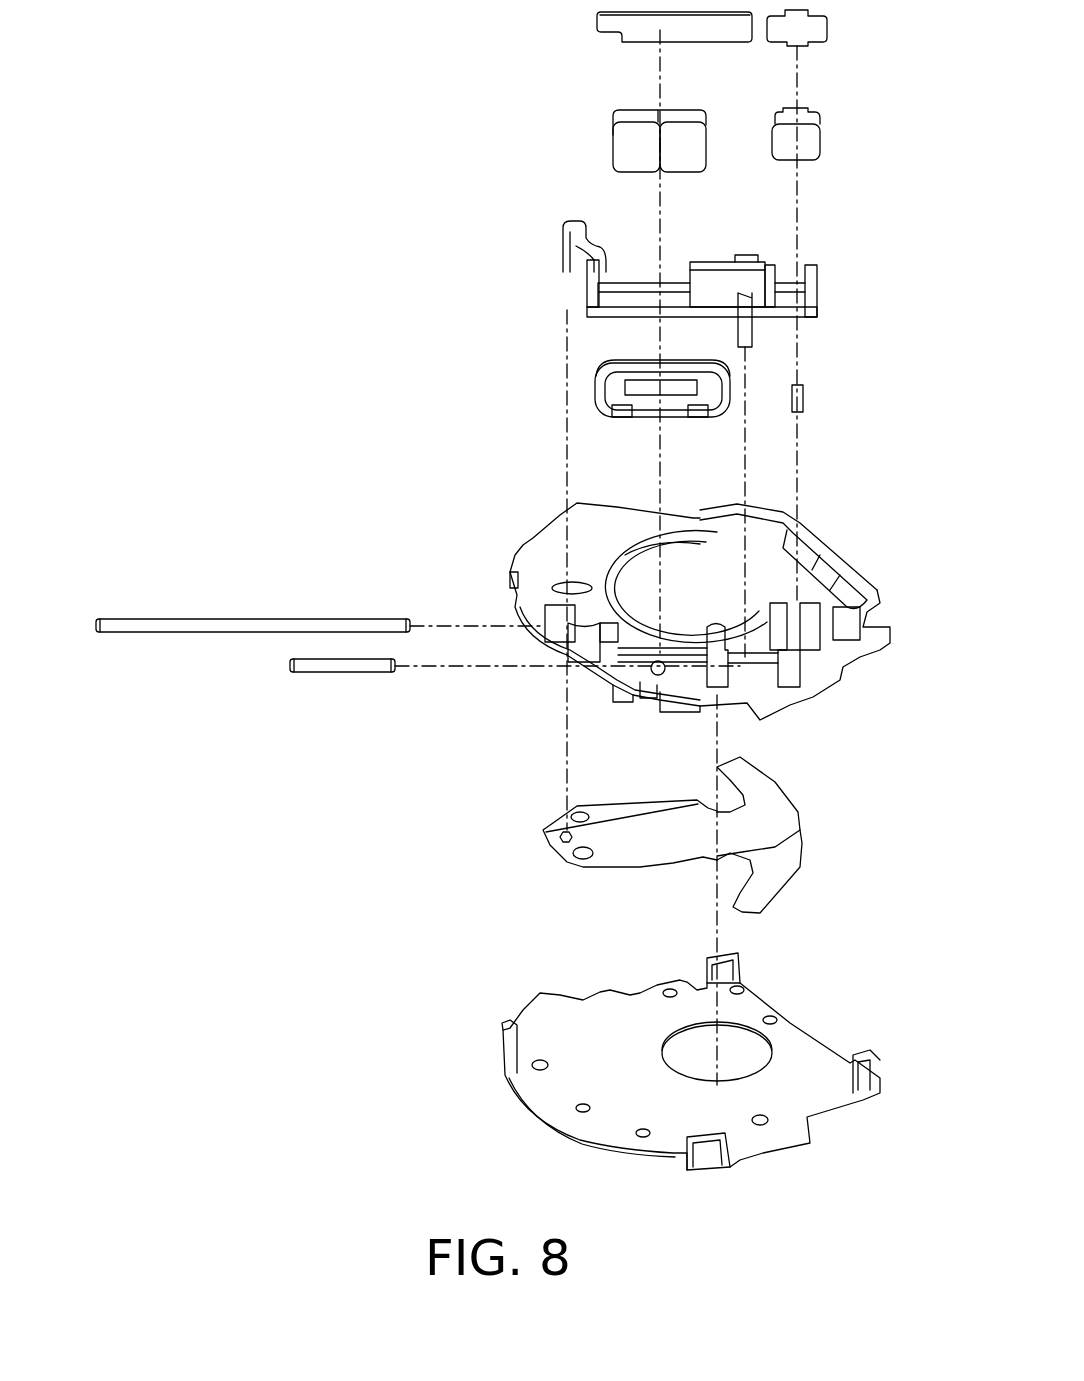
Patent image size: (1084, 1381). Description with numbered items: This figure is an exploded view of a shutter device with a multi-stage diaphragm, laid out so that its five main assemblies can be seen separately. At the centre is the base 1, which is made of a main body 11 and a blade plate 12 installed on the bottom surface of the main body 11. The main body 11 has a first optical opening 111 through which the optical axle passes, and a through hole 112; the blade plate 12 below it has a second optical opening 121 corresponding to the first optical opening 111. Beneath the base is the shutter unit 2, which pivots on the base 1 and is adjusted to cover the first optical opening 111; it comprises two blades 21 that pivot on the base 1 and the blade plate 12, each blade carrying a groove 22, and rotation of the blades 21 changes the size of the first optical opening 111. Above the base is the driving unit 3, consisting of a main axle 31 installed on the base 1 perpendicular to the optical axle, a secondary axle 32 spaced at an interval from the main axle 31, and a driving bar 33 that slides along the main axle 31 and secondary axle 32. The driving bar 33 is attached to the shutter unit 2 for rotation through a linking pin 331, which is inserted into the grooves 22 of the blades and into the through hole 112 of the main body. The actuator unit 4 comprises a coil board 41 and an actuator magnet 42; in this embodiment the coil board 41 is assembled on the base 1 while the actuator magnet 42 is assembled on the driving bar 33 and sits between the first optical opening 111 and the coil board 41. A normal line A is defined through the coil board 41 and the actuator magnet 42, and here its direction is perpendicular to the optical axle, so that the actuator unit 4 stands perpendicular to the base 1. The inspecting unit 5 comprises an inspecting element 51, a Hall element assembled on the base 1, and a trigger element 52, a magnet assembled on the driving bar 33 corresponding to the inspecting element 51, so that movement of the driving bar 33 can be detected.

The base 1 is at (507, 597).
The main body 11 is at (537, 567).
The first optical opening 111 is at (848, 559).
The through hole 112 is at (573, 585).
The blade plate 12 is at (553, 1134).
The second optical opening 121 is at (770, 1043).
The shutter unit 2 is at (565, 863).
The blades 21 is at (767, 788).
The grooves 22 is at (567, 828).
The driving unit 3 is at (556, 298).
The main axle 31 is at (208, 627).
The secondary axle 32 is at (337, 668).
The driving bar 33 is at (553, 223).
The linking pin 331 is at (556, 273).
The actuator unit 4 is at (609, 114).
The coil board 41 is at (617, 388).
The actuator magnet 42 is at (633, 143).
The inspecting unit 5 is at (817, 113).
The inspecting element 51 is at (808, 402).
The trigger element 52 is at (800, 143).
The normal line A is at (658, 190).